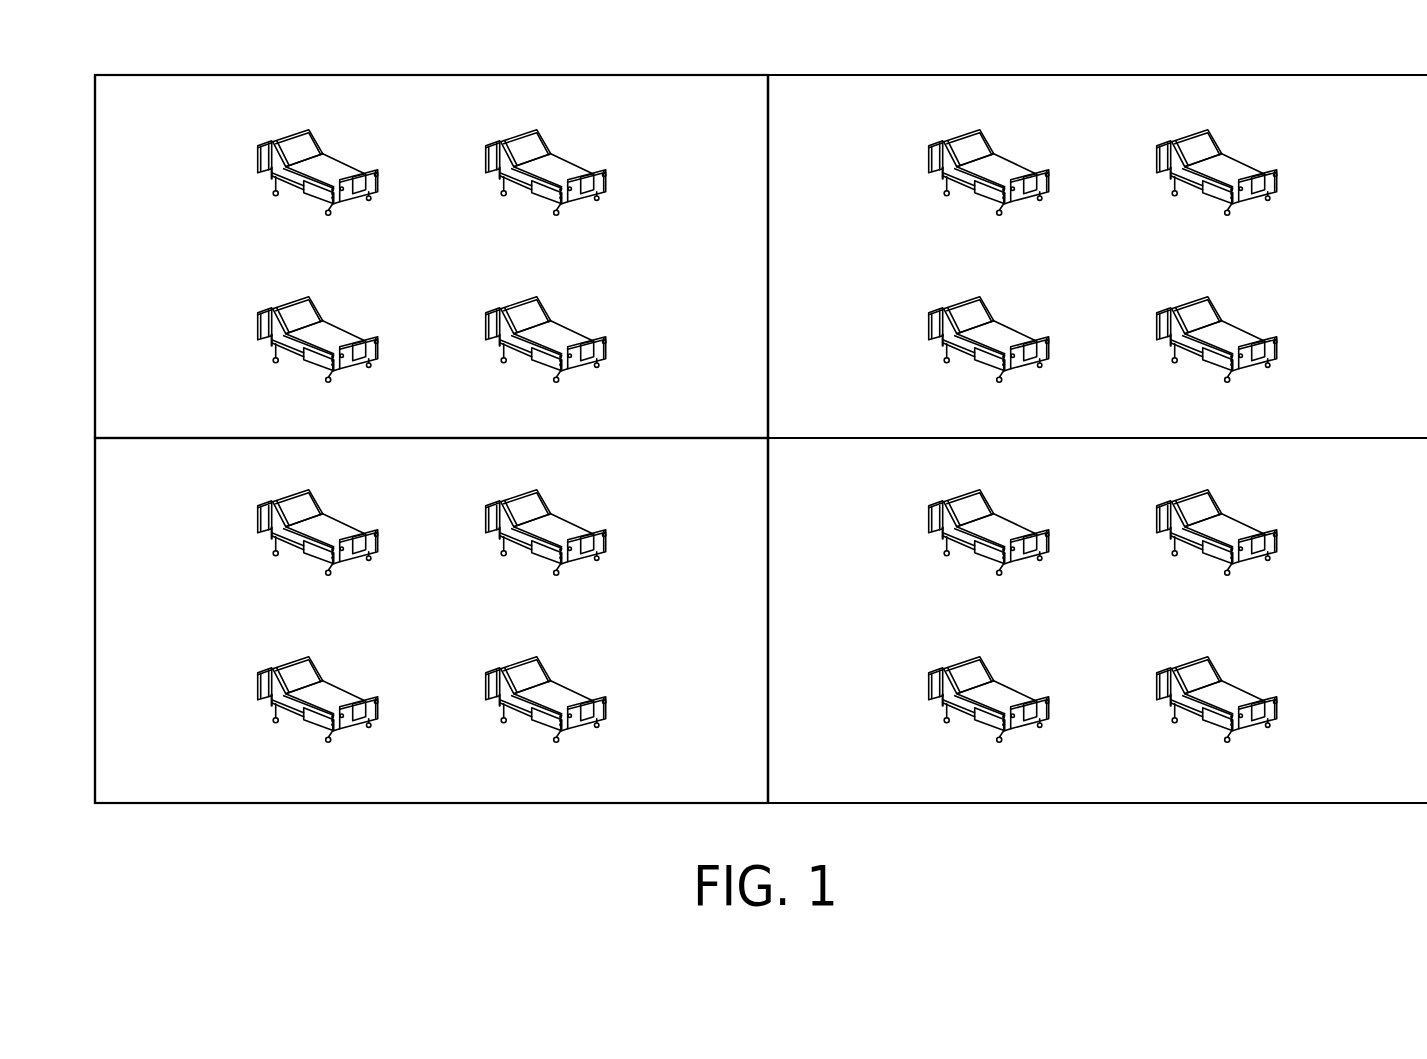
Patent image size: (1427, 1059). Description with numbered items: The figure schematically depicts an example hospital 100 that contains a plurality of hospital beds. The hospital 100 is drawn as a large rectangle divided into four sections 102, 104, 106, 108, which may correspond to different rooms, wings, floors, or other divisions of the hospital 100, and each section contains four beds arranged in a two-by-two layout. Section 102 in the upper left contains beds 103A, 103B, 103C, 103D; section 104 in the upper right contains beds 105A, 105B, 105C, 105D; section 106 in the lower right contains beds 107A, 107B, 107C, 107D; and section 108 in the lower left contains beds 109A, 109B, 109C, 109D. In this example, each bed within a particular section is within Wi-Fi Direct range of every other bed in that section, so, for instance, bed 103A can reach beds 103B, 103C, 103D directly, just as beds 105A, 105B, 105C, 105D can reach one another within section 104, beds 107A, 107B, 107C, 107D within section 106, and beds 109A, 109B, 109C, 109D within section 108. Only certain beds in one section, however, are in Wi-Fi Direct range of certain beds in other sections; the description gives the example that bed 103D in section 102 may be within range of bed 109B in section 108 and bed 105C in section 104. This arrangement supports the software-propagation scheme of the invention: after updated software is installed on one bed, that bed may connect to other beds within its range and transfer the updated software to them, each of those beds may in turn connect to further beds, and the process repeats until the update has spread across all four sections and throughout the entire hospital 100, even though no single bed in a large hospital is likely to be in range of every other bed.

The hospital 100 is at (422, 75).
The section 102 is at (451, 271).
The section 104 is at (1126, 271).
The section 106 is at (1126, 632).
The section 108 is at (451, 632).
The hospital bed 103A is at (258, 158).
The hospital bed 103B is at (606, 183).
The hospital bed 103C is at (258, 326).
The hospital bed 103D is at (606, 350).
The hospital bed 105A is at (929, 158).
The hospital bed 105B is at (1277, 183).
The hospital bed 105C is at (929, 326).
The hospital bed 105D is at (1277, 350).
The hospital bed 107A is at (929, 518).
The hospital bed 107B is at (1277, 543).
The hospital bed 107C is at (929, 686).
The hospital bed 107D is at (1277, 710).
The hospital bed 109A is at (258, 518).
The hospital bed 109B is at (606, 543).
The hospital bed 109C is at (258, 686).
The hospital bed 109D is at (606, 710).